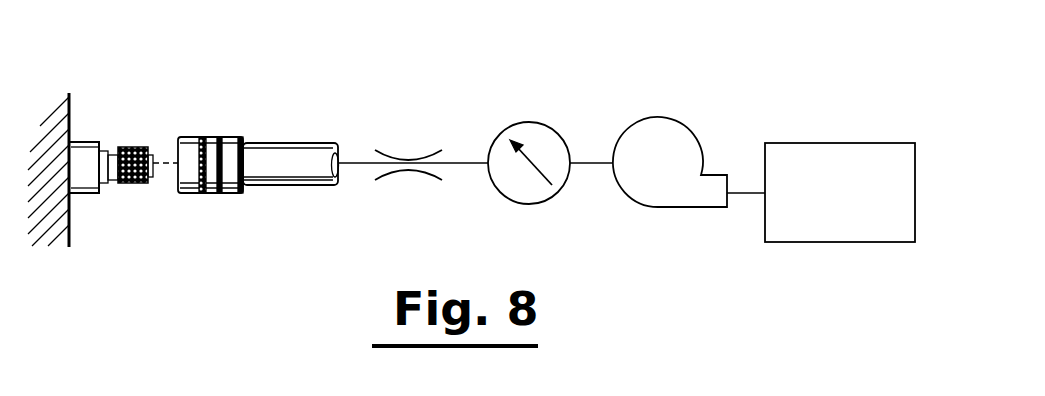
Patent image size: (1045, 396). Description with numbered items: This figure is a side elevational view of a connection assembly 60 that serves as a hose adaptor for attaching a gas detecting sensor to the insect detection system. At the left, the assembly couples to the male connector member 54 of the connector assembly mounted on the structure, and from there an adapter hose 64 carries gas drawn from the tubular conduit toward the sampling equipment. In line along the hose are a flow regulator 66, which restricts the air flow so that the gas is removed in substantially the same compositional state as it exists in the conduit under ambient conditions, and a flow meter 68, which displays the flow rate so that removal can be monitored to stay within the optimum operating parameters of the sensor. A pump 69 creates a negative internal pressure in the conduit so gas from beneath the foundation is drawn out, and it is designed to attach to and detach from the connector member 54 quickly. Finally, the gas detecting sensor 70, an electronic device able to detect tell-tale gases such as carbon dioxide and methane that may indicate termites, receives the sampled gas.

The connector member 54 is at (128, 147).
The connection assembly 60 is at (428, 70).
The adapter hose 64 is at (192, 137).
The flow regulator 66 is at (428, 150).
The flow meter 68 is at (531, 122).
The pump 69 is at (655, 118).
The gas detecting sensor 70 is at (836, 143).